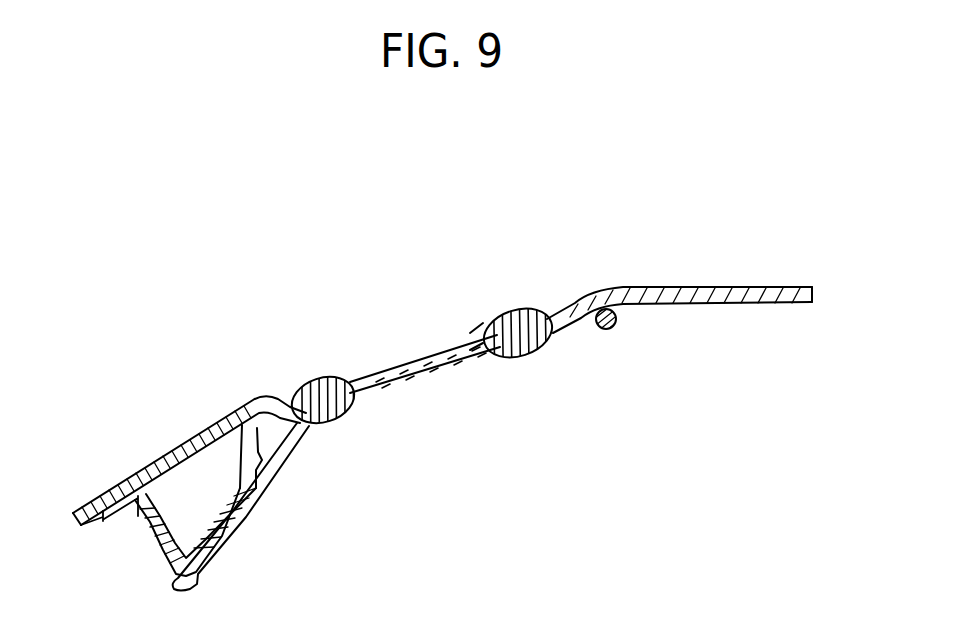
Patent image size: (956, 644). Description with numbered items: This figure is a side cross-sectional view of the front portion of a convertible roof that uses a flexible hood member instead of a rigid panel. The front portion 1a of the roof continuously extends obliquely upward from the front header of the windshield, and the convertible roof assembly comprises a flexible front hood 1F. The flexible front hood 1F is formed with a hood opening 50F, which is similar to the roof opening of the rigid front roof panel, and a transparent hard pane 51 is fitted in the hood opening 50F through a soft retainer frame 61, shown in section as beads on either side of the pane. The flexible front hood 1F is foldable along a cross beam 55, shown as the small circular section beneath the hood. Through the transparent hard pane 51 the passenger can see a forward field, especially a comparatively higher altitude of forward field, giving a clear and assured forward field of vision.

The front portion 1a is at (145, 468).
The flexible front hood 1F is at (775, 286).
The transparent hard pane 51 is at (387, 373).
The hood opening 50F is at (483, 335).
The soft retainer frame 61 is at (348, 421).
The cross beam 55 is at (614, 330).